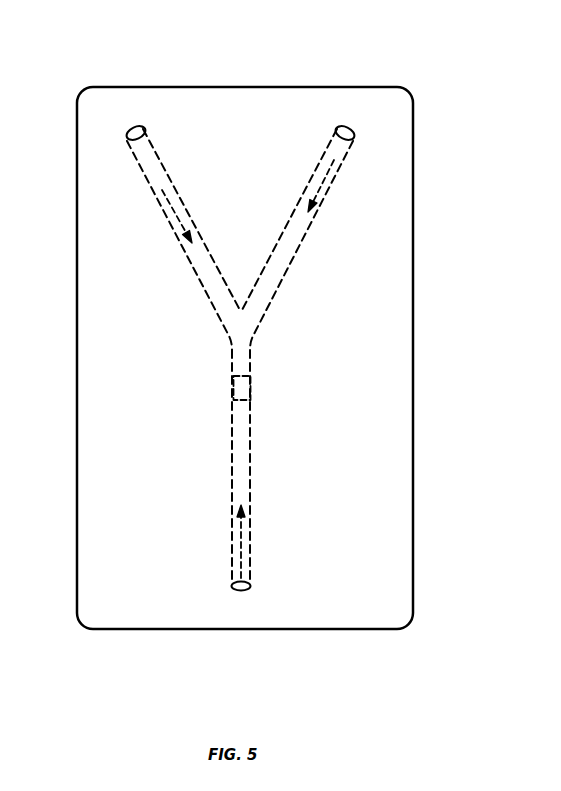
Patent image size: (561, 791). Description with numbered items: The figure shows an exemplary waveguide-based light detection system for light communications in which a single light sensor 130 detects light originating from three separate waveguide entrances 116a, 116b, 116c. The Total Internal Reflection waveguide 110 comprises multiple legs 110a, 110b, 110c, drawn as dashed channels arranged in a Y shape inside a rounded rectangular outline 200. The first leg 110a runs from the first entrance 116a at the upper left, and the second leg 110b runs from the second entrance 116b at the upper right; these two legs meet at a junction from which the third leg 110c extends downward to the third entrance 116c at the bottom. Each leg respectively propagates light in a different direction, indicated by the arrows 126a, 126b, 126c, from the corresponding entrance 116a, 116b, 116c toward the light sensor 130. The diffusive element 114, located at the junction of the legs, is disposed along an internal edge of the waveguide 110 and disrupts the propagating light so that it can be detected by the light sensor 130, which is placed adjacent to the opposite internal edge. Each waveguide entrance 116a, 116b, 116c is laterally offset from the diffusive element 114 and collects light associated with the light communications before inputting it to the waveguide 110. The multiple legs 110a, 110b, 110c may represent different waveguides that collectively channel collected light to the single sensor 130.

The waveguide 110 is at (293, 359).
The first leg 110a is at (207, 292).
The second leg 110b is at (298, 248).
The third leg 110c is at (252, 462).
The diffusive element 114 is at (390, 373).
The light sensor 130 is at (241, 387).
The first waveguide entrance 116a is at (134, 127).
The second waveguide entrance 116b is at (345, 127).
The third waveguide entrance 116c is at (241, 591).
The light propagation direction 126a is at (180, 227).
The light propagation direction 126b is at (318, 190).
The light propagation direction 126c is at (241, 545).
The housing 200 is at (414, 490).